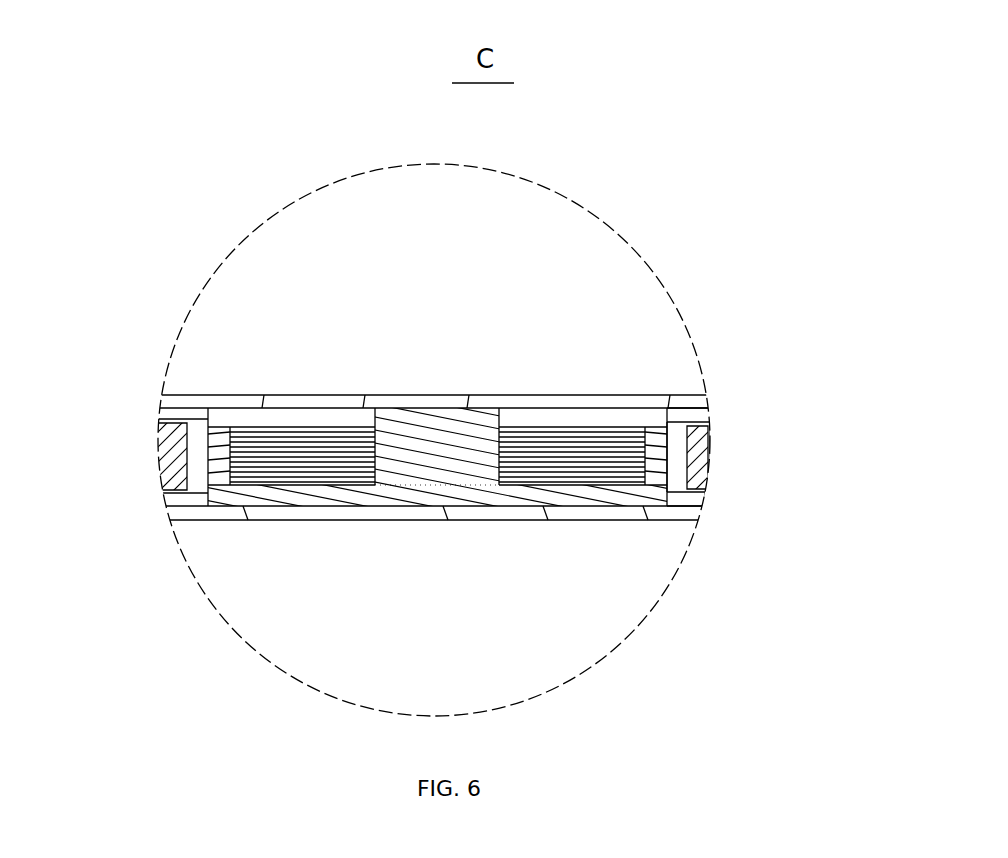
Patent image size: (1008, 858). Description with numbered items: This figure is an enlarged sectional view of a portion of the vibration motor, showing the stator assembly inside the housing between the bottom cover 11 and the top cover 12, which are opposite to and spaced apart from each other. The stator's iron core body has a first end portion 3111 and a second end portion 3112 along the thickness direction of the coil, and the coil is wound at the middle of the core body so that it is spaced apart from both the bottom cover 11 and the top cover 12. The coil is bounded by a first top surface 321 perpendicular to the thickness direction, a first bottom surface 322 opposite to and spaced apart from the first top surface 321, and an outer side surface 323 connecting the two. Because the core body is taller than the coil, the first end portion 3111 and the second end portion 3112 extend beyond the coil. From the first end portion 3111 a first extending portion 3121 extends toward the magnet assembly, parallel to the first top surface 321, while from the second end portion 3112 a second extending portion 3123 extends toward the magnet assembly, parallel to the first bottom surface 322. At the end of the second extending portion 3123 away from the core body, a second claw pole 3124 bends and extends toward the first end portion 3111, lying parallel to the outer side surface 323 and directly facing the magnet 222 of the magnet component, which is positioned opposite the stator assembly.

The bottom cover 11 is at (618, 513).
The top cover 12 is at (633, 402).
The magnet 222 is at (708, 477).
The first top surface 321 is at (577, 422).
The first bottom surface 322 is at (572, 487).
The outer side surface 323 is at (226, 466).
The first end portion 3111 is at (440, 418).
The second end portion 3112 is at (433, 480).
The first extending portion 3121 is at (305, 418).
The second extending portion 3123 is at (298, 495).
The second claw pole 3124 is at (655, 453).